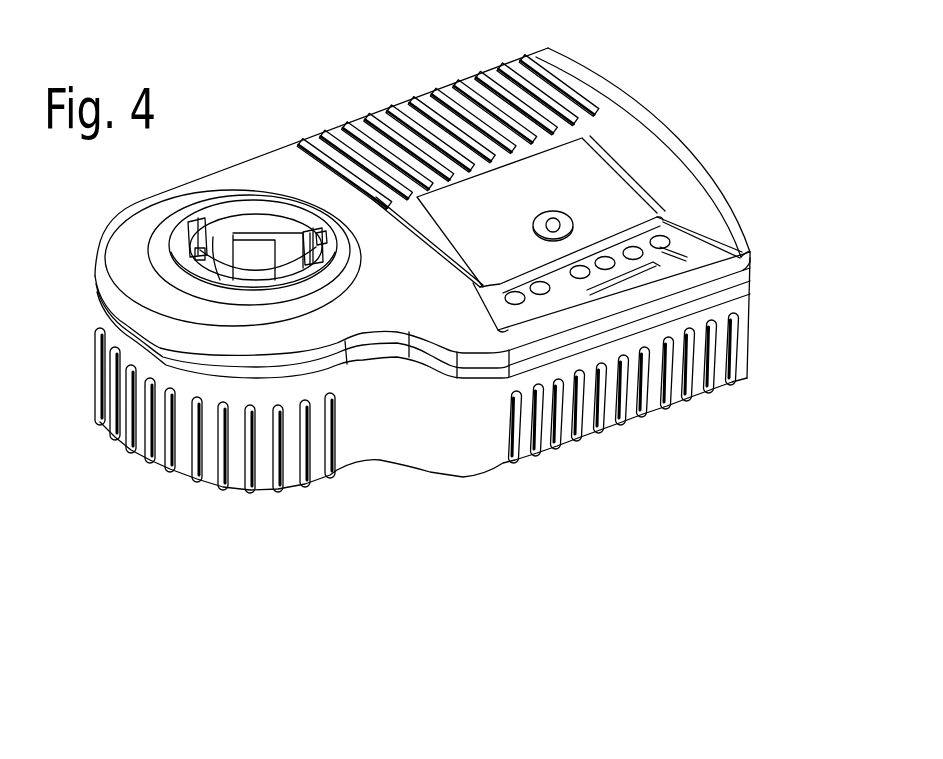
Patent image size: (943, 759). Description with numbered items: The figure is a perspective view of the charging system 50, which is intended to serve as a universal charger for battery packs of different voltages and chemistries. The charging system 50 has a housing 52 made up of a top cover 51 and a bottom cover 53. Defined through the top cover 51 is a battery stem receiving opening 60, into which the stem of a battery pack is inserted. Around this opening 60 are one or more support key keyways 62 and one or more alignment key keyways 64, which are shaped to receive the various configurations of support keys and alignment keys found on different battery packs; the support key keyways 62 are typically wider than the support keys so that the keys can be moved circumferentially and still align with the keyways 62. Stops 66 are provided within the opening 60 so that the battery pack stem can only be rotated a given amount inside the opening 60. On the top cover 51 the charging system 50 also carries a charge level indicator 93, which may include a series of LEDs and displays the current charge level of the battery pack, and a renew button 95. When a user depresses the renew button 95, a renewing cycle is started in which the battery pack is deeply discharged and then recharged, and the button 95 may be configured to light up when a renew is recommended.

The charging system 50 is at (667, 70).
The top cover 51 is at (727, 227).
The housing 52 is at (683, 153).
The bottom cover 53 is at (750, 337).
The battery stem receiving opening 60 is at (245, 203).
The support key keyways 62 is at (230, 233).
The alignment key keyways 64 is at (313, 237).
The stops 66 is at (193, 230).
The charge level indicator 93 is at (744, 255).
The renew button 95 is at (552, 222).